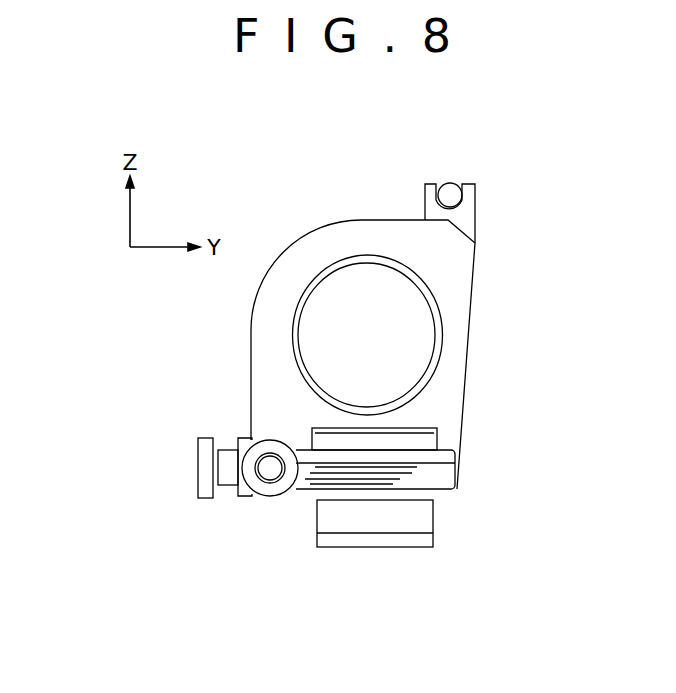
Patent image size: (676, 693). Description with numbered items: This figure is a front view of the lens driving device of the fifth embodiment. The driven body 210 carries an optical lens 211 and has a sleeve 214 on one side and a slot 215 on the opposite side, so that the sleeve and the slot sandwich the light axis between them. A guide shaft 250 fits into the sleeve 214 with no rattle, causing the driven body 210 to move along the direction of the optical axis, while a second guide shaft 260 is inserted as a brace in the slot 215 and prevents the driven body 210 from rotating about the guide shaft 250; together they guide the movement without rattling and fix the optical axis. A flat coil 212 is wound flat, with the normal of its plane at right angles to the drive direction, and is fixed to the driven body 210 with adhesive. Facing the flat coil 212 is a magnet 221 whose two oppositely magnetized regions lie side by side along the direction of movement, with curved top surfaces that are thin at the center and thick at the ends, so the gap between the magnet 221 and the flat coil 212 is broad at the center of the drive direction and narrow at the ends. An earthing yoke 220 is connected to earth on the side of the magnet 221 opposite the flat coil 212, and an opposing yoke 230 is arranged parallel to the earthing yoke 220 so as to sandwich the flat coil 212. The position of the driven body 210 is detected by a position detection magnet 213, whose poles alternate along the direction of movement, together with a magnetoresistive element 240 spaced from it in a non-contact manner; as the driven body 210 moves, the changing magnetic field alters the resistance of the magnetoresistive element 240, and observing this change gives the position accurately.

The driven body 210 is at (362, 247).
The optical lens 211 is at (335, 307).
The flat coil 212 is at (442, 478).
The position detection magnet 213 is at (232, 486).
The sleeve 214 is at (268, 447).
The slot 215 is at (425, 212).
The earthing yoke 220 is at (423, 540).
The magnet 221 is at (343, 523).
The opposing yoke 230 is at (423, 442).
The magnetoresistive element 240 is at (208, 473).
The guide shaft 250 is at (270, 480).
The guide shaft 260 is at (452, 200).